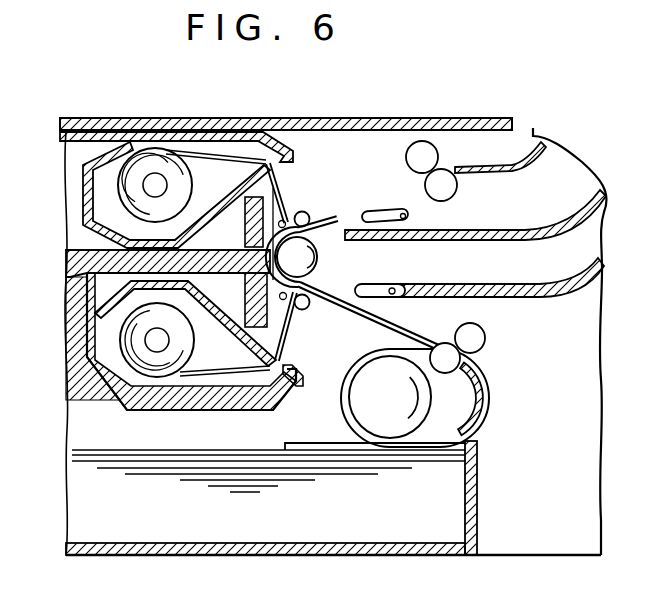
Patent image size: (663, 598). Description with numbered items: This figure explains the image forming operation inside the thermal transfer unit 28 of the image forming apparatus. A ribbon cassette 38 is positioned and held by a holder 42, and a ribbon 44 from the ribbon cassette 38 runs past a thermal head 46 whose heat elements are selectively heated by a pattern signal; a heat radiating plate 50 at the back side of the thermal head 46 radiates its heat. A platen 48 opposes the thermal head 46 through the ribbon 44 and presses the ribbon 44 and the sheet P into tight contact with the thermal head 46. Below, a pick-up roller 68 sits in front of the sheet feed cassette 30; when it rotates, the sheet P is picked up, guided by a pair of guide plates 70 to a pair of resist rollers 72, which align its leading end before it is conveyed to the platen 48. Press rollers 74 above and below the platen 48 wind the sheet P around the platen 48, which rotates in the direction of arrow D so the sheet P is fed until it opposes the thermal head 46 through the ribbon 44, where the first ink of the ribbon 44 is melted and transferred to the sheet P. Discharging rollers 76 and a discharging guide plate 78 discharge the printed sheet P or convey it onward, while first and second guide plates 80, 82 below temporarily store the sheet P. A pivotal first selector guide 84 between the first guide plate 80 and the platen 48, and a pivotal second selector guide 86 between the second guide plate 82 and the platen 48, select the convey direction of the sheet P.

The thermal transfer unit 28 is at (350, 155).
The sheet feed cassette 30 is at (478, 483).
The ribbon cassette 38 is at (100, 137).
The holder 42 is at (72, 283).
The ribbon 44 is at (282, 341).
The thermal head 46 is at (266, 203).
The platen 48 is at (323, 248).
The heat radiating plate 50 is at (252, 214).
The pick-up roller 68 is at (354, 412).
The guide plates 70 is at (478, 400).
The resist rollers 72 is at (470, 370).
The press rollers 74 is at (302, 211).
The discharging rollers 76 is at (426, 178).
The discharging guide plate 78 is at (533, 130).
The first guide plate 80 is at (550, 283).
The second guide plate 82 is at (572, 228).
The first selector guide 84 is at (390, 286).
The second selector guide 86 is at (376, 210).
The arrow D is at (312, 260).
The sheet P is at (414, 336).